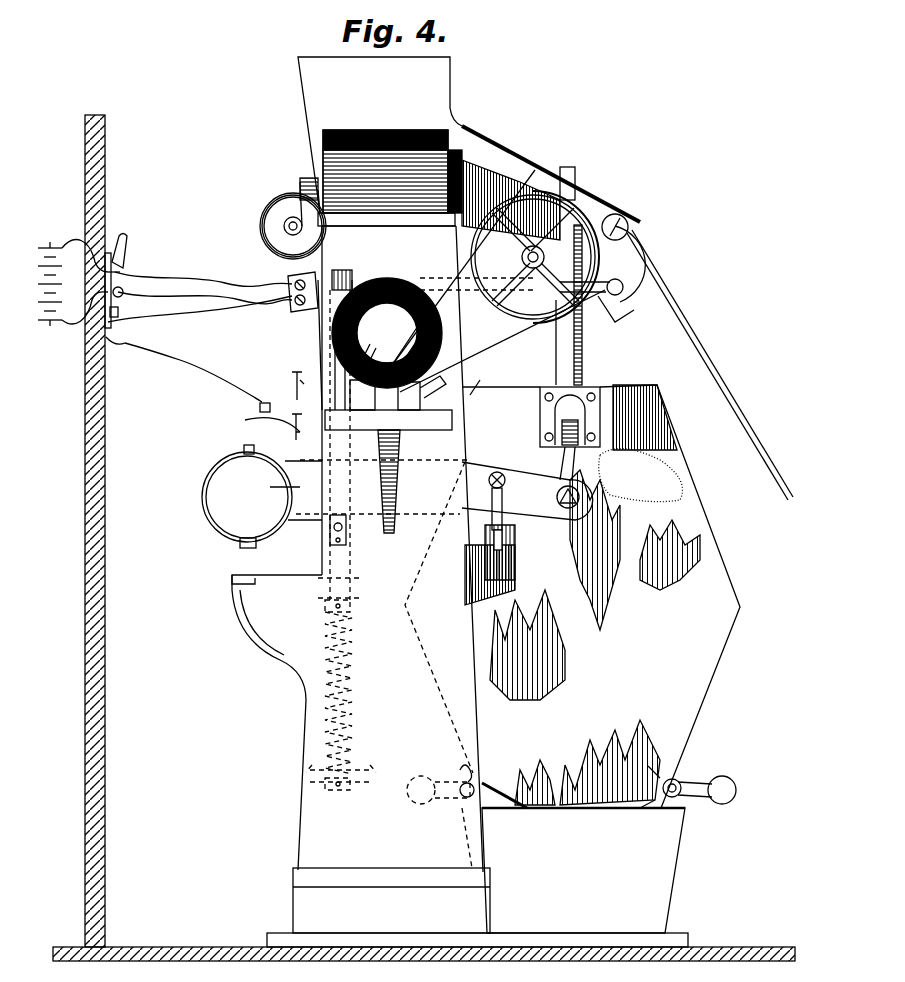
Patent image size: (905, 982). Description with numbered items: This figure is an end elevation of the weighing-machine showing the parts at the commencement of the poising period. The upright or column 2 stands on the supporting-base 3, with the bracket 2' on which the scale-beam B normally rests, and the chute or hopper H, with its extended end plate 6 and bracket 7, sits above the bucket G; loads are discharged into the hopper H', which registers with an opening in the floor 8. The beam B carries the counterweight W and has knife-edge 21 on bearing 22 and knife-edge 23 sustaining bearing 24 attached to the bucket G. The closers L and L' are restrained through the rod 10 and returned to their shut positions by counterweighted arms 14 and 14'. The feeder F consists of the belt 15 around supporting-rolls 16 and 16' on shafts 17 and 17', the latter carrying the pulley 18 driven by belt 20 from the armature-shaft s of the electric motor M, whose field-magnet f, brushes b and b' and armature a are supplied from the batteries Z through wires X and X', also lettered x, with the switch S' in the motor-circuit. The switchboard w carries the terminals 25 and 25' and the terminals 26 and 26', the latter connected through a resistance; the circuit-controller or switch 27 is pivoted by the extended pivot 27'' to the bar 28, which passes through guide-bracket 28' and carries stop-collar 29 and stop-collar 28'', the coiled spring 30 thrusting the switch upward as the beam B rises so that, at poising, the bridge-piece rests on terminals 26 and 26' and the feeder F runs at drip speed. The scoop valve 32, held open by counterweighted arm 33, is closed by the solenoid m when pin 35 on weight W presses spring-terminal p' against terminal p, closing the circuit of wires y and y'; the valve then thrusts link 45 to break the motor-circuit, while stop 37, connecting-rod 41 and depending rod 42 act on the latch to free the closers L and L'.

The upright or column 2 is at (390, 549).
The bracket 2' is at (272, 637).
The supporting-base 3 is at (391, 900).
The extended end plate 6 is at (486, 150).
The laterally-extending bracket 7 is at (390, 132).
The floor 8 is at (506, 952).
The rod 10 is at (568, 166).
The counterweighted arm 14 is at (688, 777).
The counterweighted arm 14' is at (439, 665).
The endless belt or apron 15 is at (261, 226).
The supporting-roll 16 is at (278, 201).
The supporting-roll 16' is at (571, 242).
The shaft 17 is at (267, 214).
The shaft 17' is at (533, 277).
The pulley 18 is at (524, 212).
The belt 20 is at (520, 332).
The knife-edge 21 is at (506, 480).
The bearing 22 is at (503, 500).
The knife-edge 23 is at (580, 500).
The bearing 24 is at (560, 470).
The terminal 25 is at (292, 345).
The terminal 25' is at (387, 319).
The terminal 26 is at (341, 264).
The terminal 26' is at (367, 270).
The circuit-controller or switch 27 is at (286, 490).
The pivot 27'' is at (309, 535).
The bar or rod 28 is at (383, 445).
The guide-bracket 28' is at (342, 790).
The stop-collar 28'' is at (314, 602).
The stop-collar 29 is at (328, 790).
The coiled spring 30 is at (352, 676).
The valve 32 is at (626, 266).
The counterweighted arm 33 is at (612, 214).
The adjustable pin 35 is at (243, 448).
The stop 37 is at (606, 300).
The connecting-rod 41 is at (560, 366).
The depending rod 42 is at (686, 330).
The connecting link or rod 45 is at (590, 300).
The chute or hopper H is at (380, 135).
The hopper H' is at (583, 870).
The feeder F is at (293, 216).
The batteries Z is at (44, 242).
The switch S' is at (124, 281).
The conductor or wire X is at (203, 273).
The conductor or wire X' is at (205, 309).
The conductor or wire x is at (477, 342).
The conductor or wire y is at (200, 319).
The conductor or wire y' is at (184, 369).
The switchboard or box w is at (296, 312).
The spring-terminal p is at (249, 400).
The spring-terminal p' is at (263, 424).
The combined connecting-shaft and counterweight W is at (203, 498).
The armature a is at (348, 385).
The brush b is at (407, 337).
The brush b' is at (388, 471).
The field-magnet f is at (360, 332).
The armature-shaft s is at (384, 364).
The solenoid m is at (482, 200).
The electric motor M is at (422, 393).
The scale-beam B is at (478, 465).
The bucket G is at (601, 596).
The closer L is at (583, 822).
The closer L' is at (504, 785).